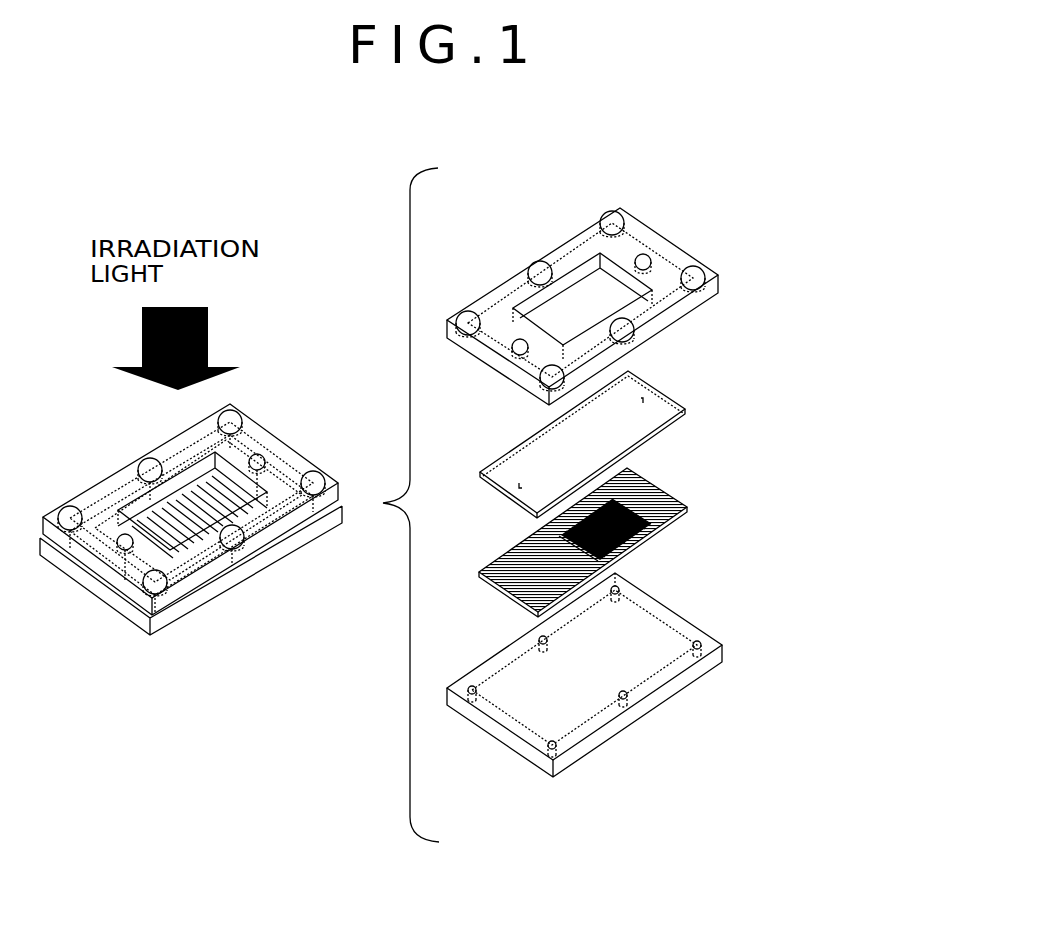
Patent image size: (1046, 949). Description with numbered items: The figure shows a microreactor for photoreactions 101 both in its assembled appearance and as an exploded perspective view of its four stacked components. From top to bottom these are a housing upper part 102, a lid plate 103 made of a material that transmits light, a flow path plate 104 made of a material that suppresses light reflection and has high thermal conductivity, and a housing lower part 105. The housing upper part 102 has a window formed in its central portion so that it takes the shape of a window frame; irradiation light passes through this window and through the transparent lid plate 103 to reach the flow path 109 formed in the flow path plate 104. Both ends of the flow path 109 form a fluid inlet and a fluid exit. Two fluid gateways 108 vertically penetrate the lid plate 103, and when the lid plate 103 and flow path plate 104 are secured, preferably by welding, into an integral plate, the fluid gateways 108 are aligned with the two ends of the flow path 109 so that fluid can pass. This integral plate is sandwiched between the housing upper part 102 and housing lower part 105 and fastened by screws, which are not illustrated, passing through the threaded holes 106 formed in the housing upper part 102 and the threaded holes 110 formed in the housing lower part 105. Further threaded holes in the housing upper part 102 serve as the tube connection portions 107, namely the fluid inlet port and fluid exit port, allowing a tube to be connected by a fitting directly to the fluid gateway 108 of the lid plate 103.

The microreactor for photoreactions 101 is at (247, 395).
The housing upper part 102 is at (682, 307).
The lid plate 103 is at (683, 409).
The flow path plate 104 is at (648, 542).
The housing lower part 105 is at (639, 675).
The threaded holes 106 is at (613, 222).
The tube connection portions 107 is at (651, 262).
The fluid gateways 108 is at (643, 400).
The flow path 109 is at (645, 545).
The threaded holes 110 is at (628, 697).